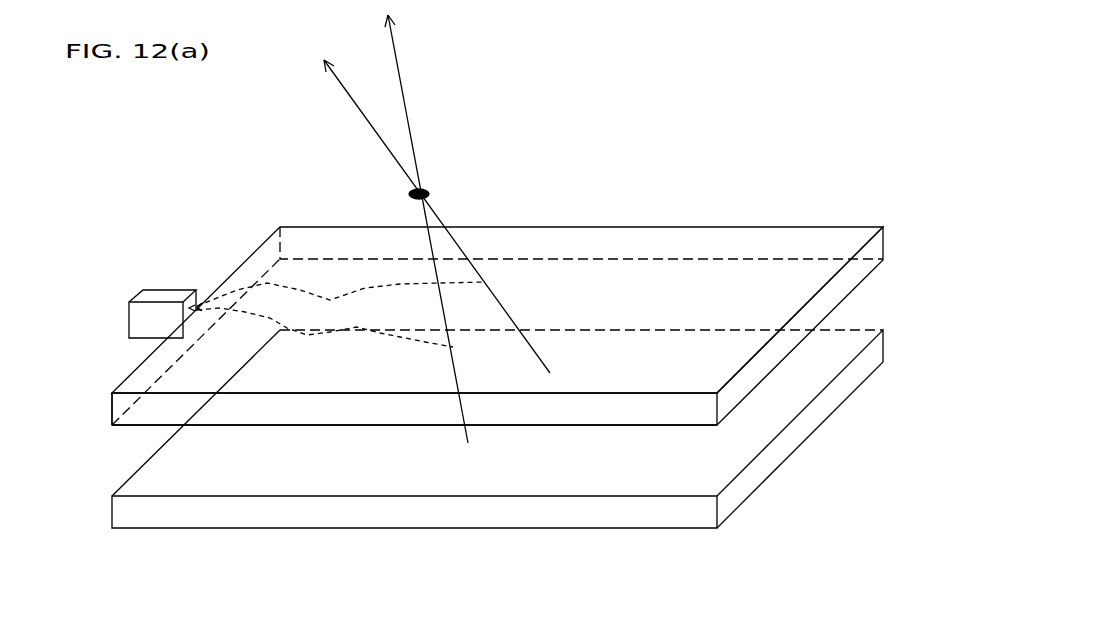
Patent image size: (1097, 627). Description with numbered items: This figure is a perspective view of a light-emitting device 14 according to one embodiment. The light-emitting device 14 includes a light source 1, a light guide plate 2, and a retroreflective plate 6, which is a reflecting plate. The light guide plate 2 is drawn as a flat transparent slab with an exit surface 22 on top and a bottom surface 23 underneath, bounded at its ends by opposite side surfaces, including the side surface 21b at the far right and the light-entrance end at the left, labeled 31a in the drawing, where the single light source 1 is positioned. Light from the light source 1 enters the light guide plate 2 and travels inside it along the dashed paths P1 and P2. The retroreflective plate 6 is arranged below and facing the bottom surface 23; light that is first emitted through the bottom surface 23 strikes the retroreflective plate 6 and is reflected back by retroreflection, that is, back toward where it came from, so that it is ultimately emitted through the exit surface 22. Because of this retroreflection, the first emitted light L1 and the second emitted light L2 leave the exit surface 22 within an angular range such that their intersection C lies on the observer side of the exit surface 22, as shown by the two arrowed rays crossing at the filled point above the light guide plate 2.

The light-emitting device 14 is at (805, 80).
The light guide plate 2 is at (714, 222).
The light source 1 is at (162, 301).
The exit surface 22 is at (766, 327).
The side surface 21b is at (775, 357).
The retroreflective plate 6 is at (607, 483).
The bottom surface 23 is at (278, 427).
The light incidence end face 31a is at (110, 403).
The first light path P1 is at (485, 282).
The second light path P2 is at (453, 347).
The first emitted light L1 is at (344, 88).
The second emitted light L2 is at (398, 62).
The intersection C is at (430, 194).